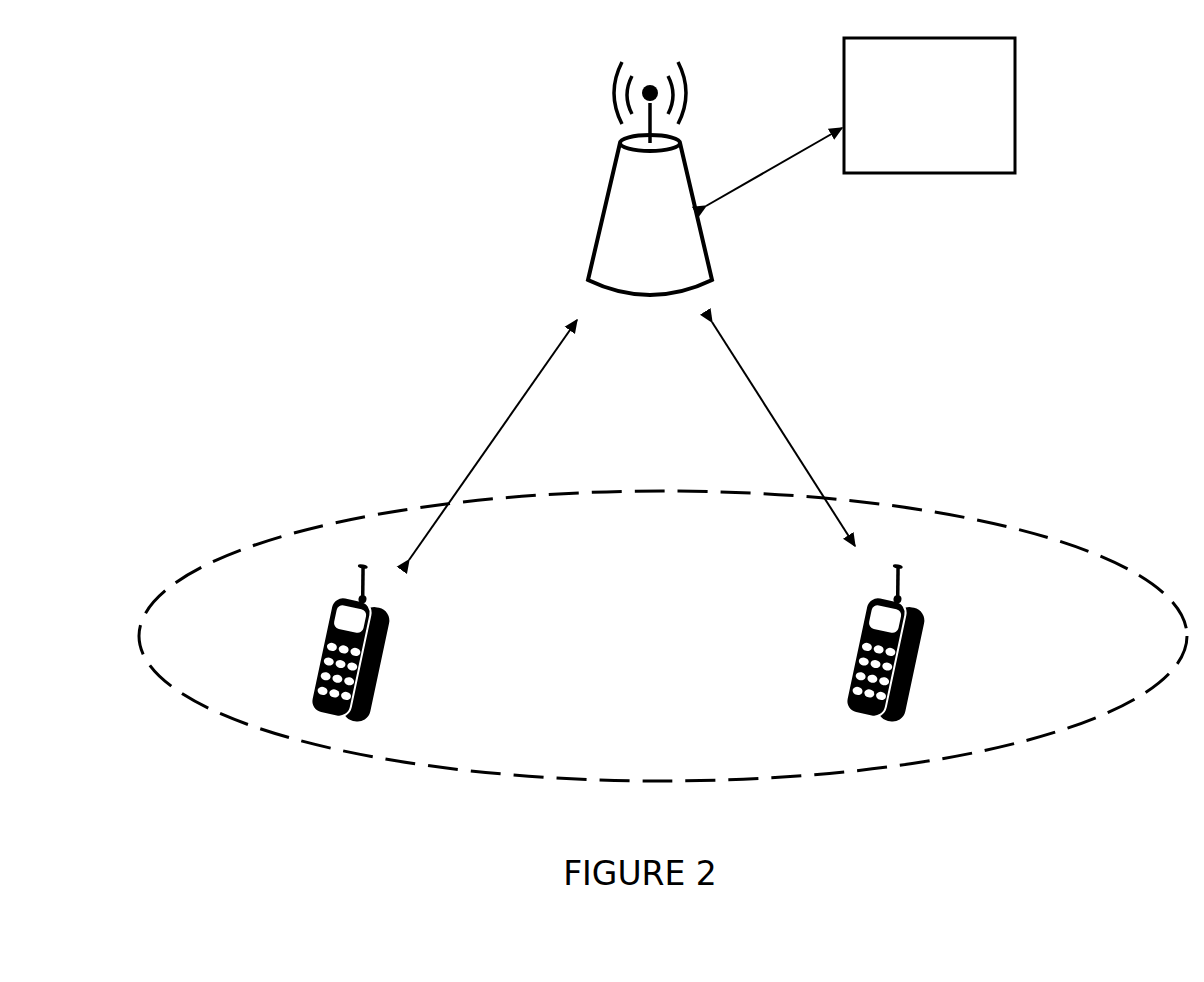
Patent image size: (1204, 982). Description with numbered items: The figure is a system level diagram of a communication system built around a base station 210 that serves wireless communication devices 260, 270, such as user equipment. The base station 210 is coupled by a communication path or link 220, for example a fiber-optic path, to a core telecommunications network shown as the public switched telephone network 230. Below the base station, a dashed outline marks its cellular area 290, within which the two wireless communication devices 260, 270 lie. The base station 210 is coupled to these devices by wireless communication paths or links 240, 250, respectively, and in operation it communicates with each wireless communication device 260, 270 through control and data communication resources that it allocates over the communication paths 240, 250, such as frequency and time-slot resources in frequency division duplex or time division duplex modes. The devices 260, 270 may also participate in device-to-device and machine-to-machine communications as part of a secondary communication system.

The base station 210 is at (628, 270).
The communication path or link 220 is at (774, 170).
The public switched telephone network 230 is at (946, 159).
The wireless communication path or link 240 is at (493, 440).
The wireless communication path or link 250 is at (783, 434).
The wireless communication device 260 is at (320, 622).
The wireless communication device 270 is at (945, 648).
The cellular area 290 is at (618, 658).